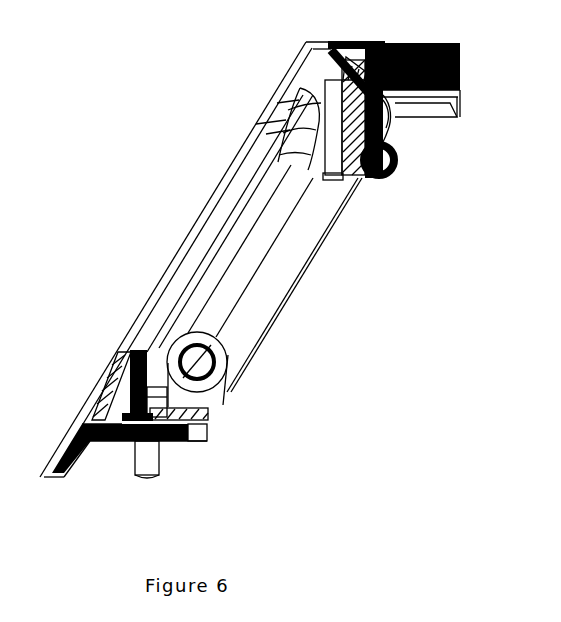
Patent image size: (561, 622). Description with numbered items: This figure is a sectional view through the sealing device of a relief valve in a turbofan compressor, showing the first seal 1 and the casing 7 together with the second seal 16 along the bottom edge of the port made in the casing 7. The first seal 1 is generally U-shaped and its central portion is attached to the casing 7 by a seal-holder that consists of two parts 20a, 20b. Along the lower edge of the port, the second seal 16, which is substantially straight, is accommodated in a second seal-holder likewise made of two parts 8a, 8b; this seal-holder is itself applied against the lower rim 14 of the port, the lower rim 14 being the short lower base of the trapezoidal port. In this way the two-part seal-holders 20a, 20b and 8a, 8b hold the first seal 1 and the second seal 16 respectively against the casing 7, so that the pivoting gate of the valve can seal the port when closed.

The first seal 1 is at (380, 120).
The casing 7 is at (303, 267).
The seal-holder part 8a is at (101, 441).
The seal-holder part 8b is at (213, 407).
The lower rim 14 is at (180, 437).
The second seal 16 is at (130, 354).
The seal-holder part 20a is at (390, 127).
The seal-holder part 20b is at (350, 170).